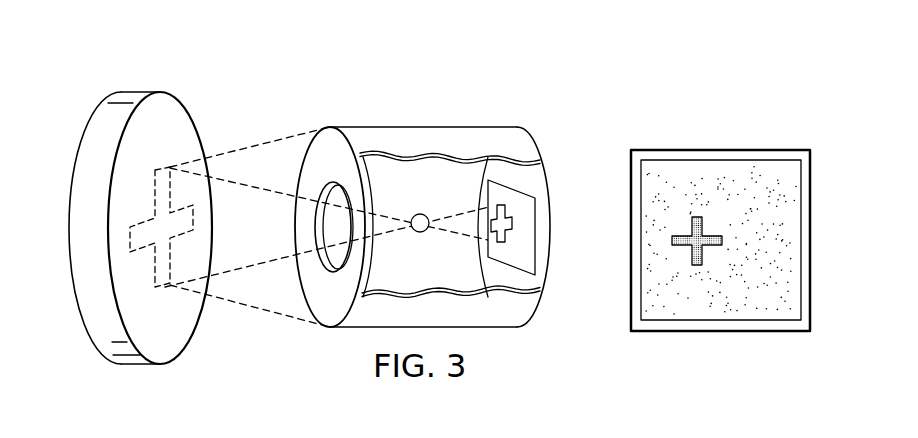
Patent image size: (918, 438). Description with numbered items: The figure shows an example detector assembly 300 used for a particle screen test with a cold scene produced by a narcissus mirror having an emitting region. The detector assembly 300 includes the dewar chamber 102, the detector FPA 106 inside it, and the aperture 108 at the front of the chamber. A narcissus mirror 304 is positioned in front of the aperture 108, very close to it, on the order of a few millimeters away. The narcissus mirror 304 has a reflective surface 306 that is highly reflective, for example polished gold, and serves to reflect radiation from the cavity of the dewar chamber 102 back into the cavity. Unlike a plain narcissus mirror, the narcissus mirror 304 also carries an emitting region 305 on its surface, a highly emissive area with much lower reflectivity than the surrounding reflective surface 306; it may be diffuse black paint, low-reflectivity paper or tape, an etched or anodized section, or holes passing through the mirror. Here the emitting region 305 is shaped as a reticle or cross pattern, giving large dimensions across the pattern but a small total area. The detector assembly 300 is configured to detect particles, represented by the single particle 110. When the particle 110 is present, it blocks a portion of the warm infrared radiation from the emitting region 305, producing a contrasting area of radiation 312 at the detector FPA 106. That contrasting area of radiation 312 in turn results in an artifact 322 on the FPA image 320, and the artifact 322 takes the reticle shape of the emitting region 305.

The detector assembly 300 is at (66, 74).
The dewar chamber 102 is at (422, 127).
The detector FPA 106 is at (525, 190).
The aperture 108 is at (332, 228).
The particle 110 is at (418, 214).
The narcissus mirror 304 is at (72, 228).
The emitting region 305 is at (130, 240).
The reflective surface 306 is at (162, 107).
The contrasting area of radiation 312 is at (506, 228).
The FPA image 320 is at (720, 150).
The artifact 322 is at (697, 265).